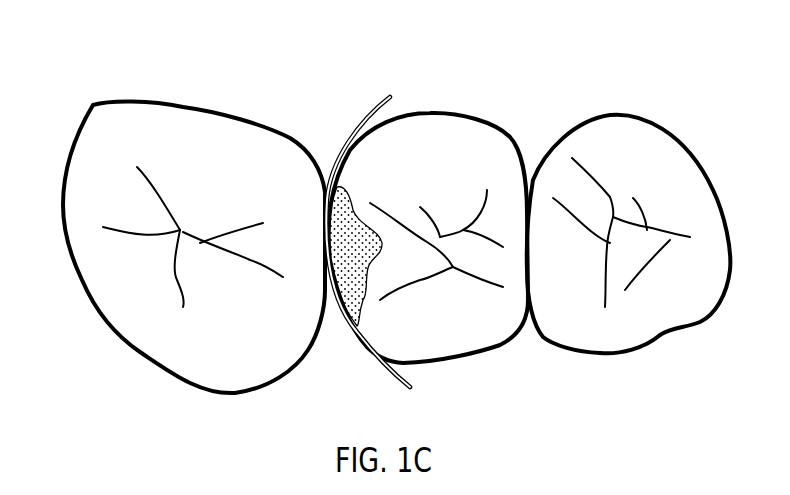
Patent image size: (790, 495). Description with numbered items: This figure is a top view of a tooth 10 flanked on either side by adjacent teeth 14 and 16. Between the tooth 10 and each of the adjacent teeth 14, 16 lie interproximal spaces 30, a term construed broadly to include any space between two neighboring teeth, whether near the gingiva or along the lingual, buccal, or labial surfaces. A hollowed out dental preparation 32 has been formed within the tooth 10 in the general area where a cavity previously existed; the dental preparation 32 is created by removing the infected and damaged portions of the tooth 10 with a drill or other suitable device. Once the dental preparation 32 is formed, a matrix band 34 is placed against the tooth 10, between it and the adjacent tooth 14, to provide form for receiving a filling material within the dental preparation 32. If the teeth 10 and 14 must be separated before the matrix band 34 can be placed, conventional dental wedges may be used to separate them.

The tooth 10 is at (438, 143).
The adjacent tooth 14 is at (200, 125).
The adjacent tooth 16 is at (635, 140).
The interproximal space 30 is at (323, 148).
The dental preparation 32 is at (347, 207).
The matrix band 34 is at (372, 107).